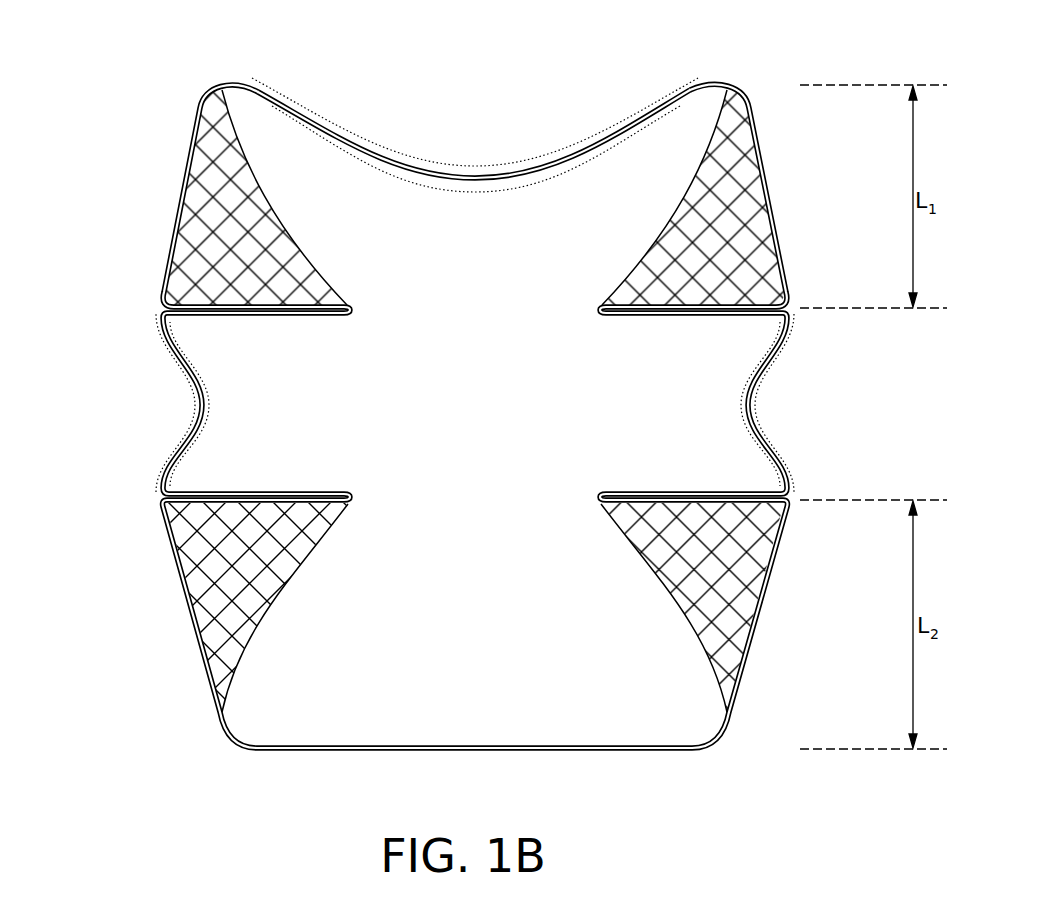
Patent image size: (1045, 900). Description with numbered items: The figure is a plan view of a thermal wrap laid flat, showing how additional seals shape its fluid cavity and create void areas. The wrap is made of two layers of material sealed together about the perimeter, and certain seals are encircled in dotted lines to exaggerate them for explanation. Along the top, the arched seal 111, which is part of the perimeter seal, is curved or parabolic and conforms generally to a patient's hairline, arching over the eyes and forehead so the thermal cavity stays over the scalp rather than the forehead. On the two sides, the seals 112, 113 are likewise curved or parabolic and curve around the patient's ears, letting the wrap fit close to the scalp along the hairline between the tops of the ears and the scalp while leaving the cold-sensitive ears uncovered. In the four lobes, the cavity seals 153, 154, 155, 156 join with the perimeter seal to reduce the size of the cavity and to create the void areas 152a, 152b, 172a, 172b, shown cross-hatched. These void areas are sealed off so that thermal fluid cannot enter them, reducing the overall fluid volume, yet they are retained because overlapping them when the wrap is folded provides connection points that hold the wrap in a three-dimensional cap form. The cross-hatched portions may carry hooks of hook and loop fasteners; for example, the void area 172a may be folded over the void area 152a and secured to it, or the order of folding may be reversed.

The arched seal 111 is at (497, 172).
The seal 112 is at (197, 393).
The seal 113 is at (757, 387).
The void area 152a is at (172, 176).
The void area 152b is at (777, 206).
The cavity seal 153 is at (270, 208).
The cavity seal 154 is at (696, 180).
The cavity seal 155 is at (240, 606).
The cavity seal 156 is at (698, 620).
The void area 172a is at (184, 626).
The void area 172b is at (767, 625).